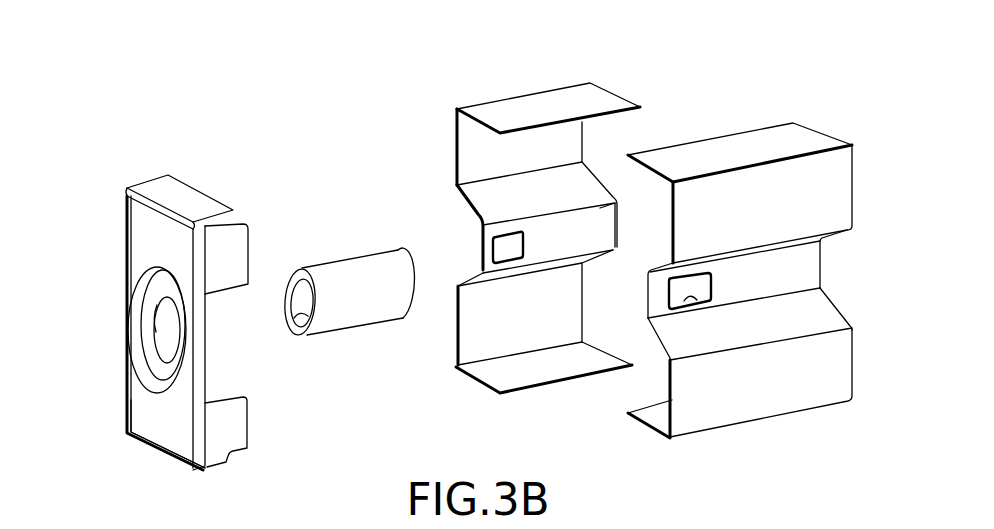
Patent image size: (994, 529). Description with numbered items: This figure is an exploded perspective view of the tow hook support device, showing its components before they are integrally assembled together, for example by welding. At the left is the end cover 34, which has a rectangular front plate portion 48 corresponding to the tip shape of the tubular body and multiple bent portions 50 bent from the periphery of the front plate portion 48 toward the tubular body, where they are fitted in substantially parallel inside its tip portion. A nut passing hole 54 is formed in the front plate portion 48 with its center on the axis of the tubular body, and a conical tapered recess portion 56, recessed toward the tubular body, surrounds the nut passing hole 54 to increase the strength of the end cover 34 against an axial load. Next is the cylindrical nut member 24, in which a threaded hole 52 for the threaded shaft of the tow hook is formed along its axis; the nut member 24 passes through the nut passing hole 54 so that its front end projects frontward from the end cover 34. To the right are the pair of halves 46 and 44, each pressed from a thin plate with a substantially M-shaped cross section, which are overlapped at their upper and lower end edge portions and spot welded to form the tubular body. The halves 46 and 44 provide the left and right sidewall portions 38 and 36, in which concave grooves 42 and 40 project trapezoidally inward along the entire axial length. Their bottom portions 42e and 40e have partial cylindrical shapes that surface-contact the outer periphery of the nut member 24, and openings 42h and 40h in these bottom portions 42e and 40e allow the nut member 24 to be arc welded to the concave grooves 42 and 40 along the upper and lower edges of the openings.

The end cover 34 is at (175, 302).
The bent portions 50 is at (180, 195).
The nut passing hole 54 is at (157, 306).
The tapered recess portion 56 is at (157, 378).
The front plate portion 48 is at (162, 425).
The nut member 24 is at (349, 296).
The threaded hole 52 is at (293, 334).
The half 46 is at (527, 209).
The sidewall portion 38 is at (527, 235).
The concave groove 42 is at (519, 234).
The opening 42h is at (505, 257).
The bottom portion 42e is at (585, 237).
The half 44 is at (756, 259).
The sidewall portion 36 is at (756, 297).
The concave groove 40 is at (766, 372).
The bottom portion 40e is at (797, 265).
The opening 40h is at (697, 300).